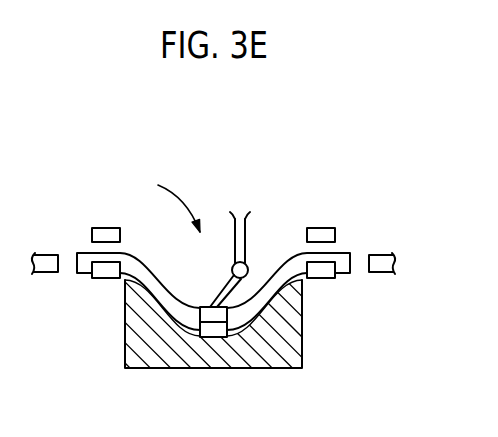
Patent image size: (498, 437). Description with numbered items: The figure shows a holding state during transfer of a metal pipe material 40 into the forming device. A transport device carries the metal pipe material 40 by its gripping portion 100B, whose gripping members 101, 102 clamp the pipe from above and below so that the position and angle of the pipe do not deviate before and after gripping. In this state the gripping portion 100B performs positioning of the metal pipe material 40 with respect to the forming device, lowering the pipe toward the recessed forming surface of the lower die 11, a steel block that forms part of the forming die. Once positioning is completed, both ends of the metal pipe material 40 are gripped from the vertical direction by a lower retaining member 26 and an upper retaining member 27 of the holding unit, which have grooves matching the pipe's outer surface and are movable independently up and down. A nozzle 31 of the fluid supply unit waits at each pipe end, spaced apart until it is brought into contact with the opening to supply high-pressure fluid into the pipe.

The lower die 11 is at (296, 342).
The metal pipe material 40 is at (141, 263).
The retaining member 26 is at (100, 279).
The retaining member 27 is at (104, 228).
The nozzle 31 is at (44, 258).
The gripping member 101 is at (207, 306).
The gripping member 102 is at (211, 334).
The gripping portion 100B is at (246, 205).